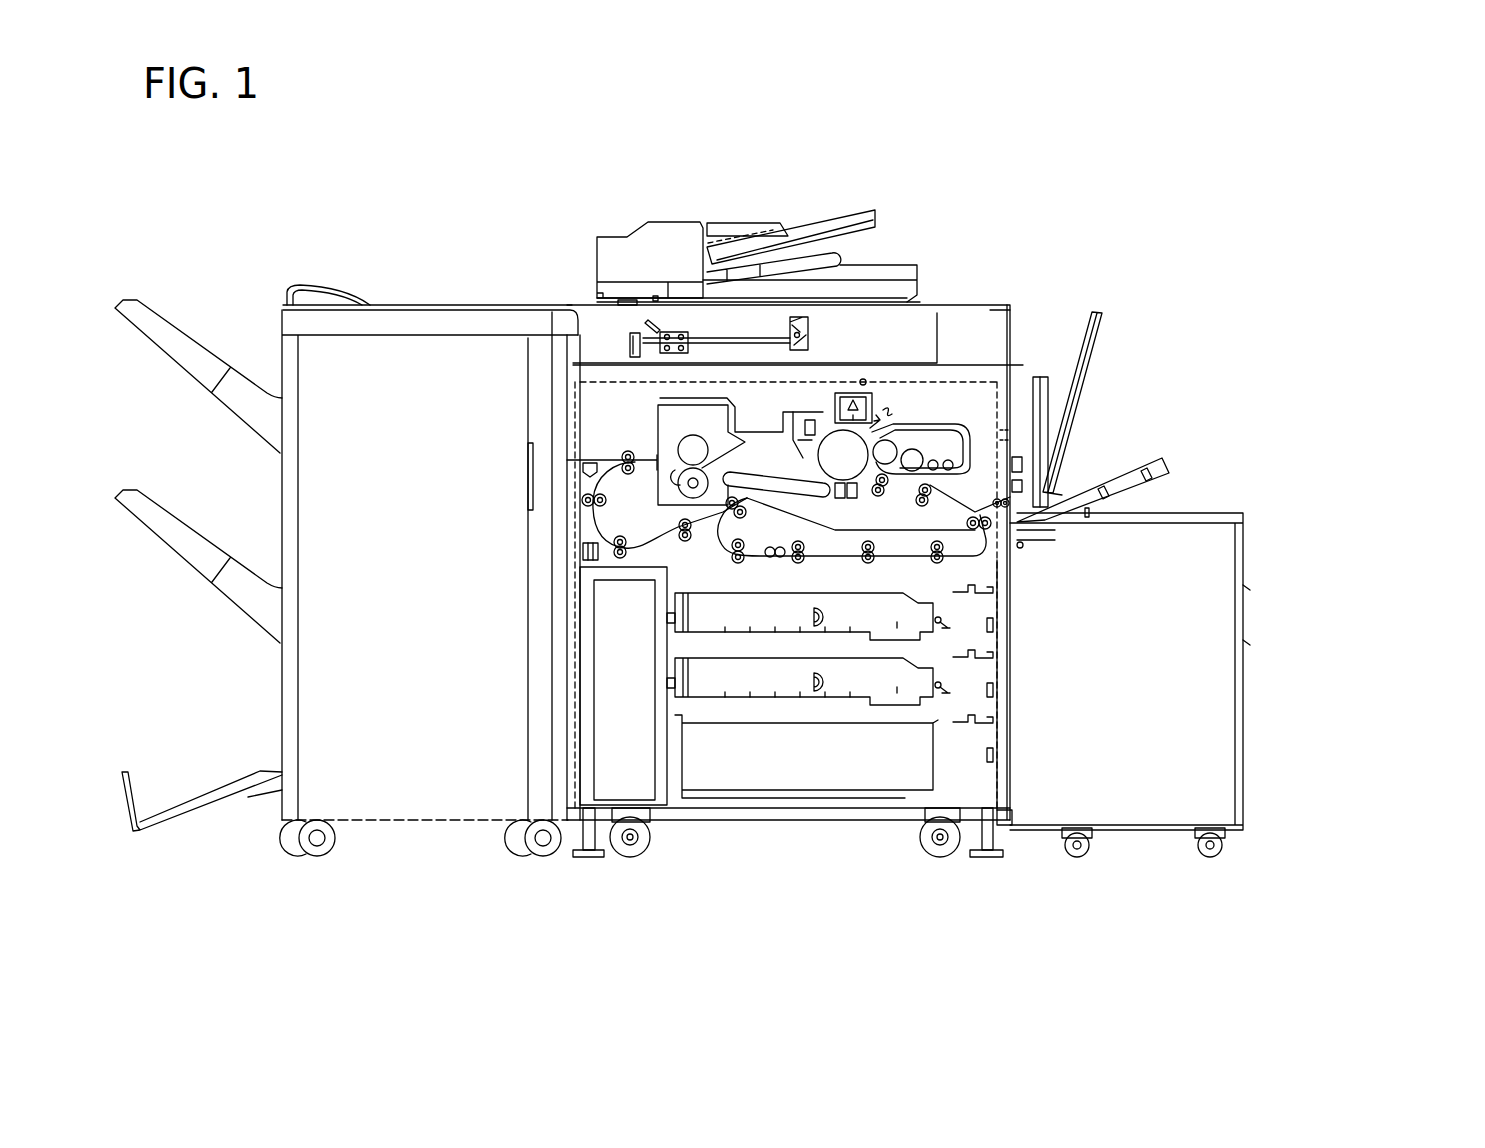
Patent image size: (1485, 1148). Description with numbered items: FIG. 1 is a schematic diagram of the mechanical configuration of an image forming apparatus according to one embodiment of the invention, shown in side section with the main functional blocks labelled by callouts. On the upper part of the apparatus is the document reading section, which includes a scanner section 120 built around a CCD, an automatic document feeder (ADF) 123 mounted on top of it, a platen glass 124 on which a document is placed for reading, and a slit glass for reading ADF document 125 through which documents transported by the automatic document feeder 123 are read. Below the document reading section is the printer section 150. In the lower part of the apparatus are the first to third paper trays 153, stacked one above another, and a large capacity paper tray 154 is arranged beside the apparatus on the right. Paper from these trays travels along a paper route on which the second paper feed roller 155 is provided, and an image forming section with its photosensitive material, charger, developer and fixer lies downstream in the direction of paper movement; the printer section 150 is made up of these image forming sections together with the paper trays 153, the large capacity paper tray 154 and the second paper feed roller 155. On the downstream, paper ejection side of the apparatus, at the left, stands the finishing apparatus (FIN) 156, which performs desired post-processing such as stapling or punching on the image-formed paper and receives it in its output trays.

The scanner section 120 is at (1123, 160).
The automatic document feeder (ADF) 123 is at (736, 87).
The platen glass 124 is at (1023, 88).
The slit glass for reading ADF document 125 is at (383, 112).
The printer section 150 is at (1176, 250).
The first to third paper trays 153 is at (663, 875).
The large capacity paper tray 154 is at (1273, 478).
The second paper feed roller 155 is at (1176, 348).
The finishing apparatus (FNS) 156 is at (211, 187).